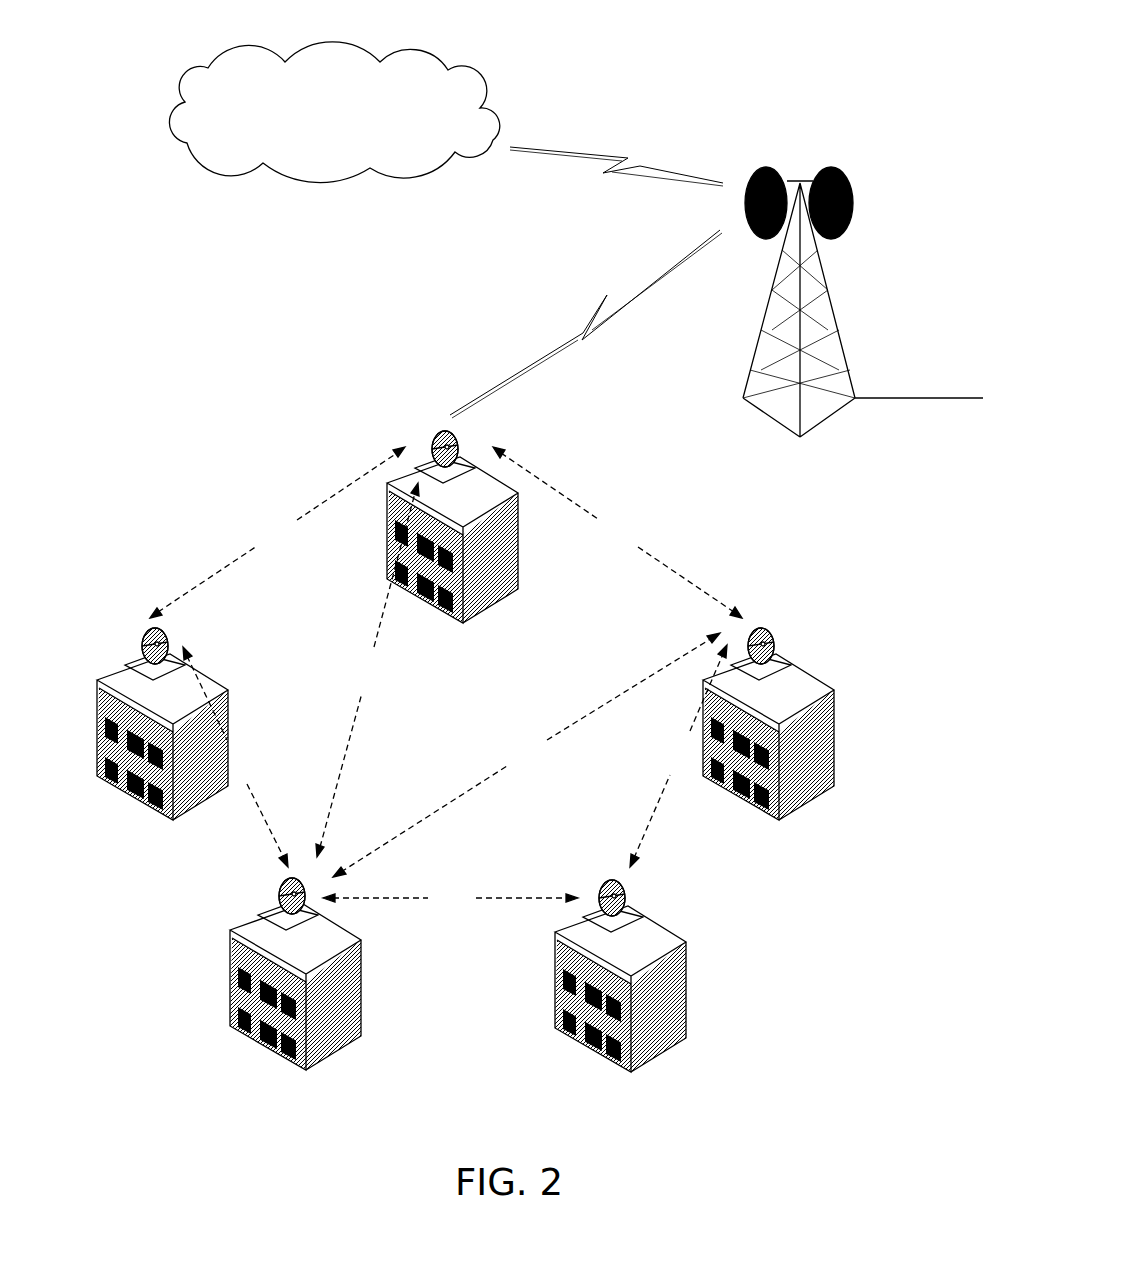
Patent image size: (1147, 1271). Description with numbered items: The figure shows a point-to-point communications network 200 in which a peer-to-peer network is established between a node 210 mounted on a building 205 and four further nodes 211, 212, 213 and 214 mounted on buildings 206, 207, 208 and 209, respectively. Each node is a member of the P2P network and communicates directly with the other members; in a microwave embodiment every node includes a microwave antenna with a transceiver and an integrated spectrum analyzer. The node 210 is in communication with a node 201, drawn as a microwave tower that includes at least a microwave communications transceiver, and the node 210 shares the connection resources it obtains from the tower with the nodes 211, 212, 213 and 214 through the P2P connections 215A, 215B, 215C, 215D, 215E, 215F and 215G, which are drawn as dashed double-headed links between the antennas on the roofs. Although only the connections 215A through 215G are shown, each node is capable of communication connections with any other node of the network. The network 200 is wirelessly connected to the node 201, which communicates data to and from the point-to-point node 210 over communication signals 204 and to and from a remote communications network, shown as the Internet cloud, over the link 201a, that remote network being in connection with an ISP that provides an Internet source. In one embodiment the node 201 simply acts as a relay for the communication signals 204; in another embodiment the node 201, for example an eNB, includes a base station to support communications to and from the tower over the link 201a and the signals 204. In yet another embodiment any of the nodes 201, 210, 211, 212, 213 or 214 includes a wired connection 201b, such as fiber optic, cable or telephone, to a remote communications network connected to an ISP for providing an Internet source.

The point-to-point communications network 200 is at (175, 330).
The node 201 is at (852, 183).
The communication to/from remote communications network 201a is at (647, 173).
The wired connection 201b is at (908, 398).
The communication signals 204 is at (530, 357).
The building 205 is at (452, 540).
The building 206 is at (768, 737).
The building 207 is at (620, 989).
The building 208 is at (295, 987).
The building 209 is at (162, 737).
The node 210 is at (437, 433).
The node 211 is at (777, 630).
The node 212 is at (627, 890).
The node 213 is at (277, 895).
The node 214 is at (142, 633).
The P2P connection 215A is at (277, 532).
The P2P connection 215B is at (617, 532).
The P2P connection 215C is at (678, 756).
The P2P connection 215D is at (450, 898).
The P2P connection 215E is at (235, 757).
The P2P connection 215F is at (367, 670).
The P2P connection 215G is at (526, 755).